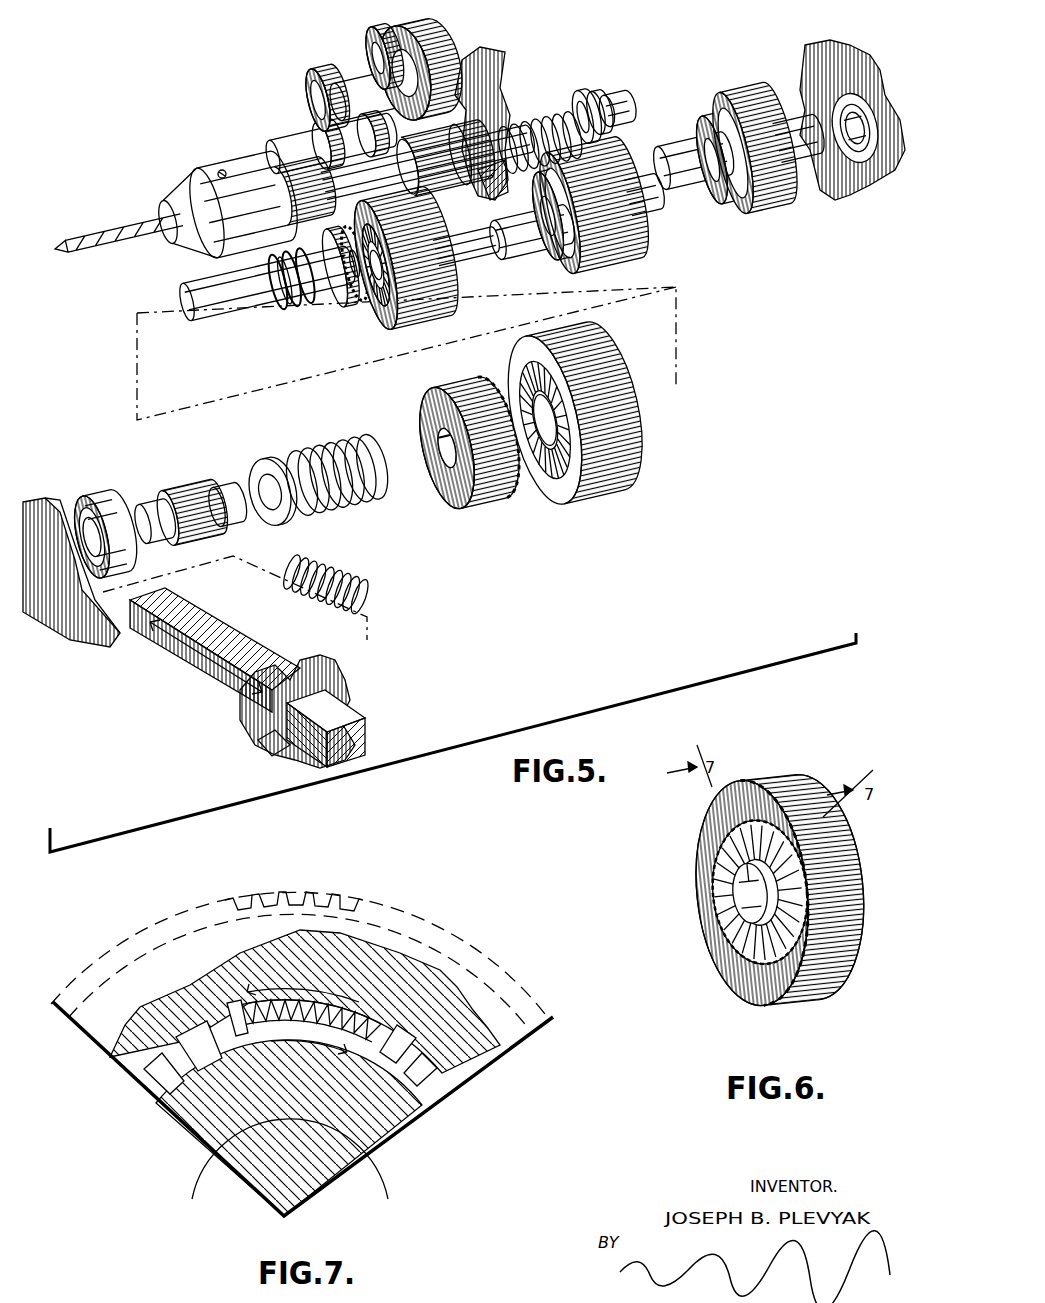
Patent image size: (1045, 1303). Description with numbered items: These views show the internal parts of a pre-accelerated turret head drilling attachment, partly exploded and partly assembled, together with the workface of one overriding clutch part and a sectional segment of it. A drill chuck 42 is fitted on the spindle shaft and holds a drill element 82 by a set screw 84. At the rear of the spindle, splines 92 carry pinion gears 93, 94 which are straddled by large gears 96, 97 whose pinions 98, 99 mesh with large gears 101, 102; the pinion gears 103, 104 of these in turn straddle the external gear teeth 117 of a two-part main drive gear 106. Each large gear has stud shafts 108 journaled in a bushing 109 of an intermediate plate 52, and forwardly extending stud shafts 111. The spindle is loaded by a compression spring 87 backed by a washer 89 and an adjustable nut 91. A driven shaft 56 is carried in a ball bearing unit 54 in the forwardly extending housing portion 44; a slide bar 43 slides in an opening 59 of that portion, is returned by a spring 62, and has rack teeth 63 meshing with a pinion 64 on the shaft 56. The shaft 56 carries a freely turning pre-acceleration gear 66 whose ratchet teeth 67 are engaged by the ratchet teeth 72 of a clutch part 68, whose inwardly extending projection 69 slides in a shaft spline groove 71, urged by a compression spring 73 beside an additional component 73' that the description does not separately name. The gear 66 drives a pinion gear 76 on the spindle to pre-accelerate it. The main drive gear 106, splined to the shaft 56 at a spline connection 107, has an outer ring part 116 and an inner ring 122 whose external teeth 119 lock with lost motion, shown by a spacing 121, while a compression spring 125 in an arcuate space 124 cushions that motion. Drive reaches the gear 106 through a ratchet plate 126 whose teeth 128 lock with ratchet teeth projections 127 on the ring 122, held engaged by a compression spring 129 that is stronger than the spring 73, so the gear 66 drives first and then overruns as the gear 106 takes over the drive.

In FIG. 5, the drill chuck 42 is at (200, 180).
In FIG. 5, the slide bar 43 is at (360, 726).
In FIG. 5, the forwardly extending housing portion 44 is at (60, 640).
In FIG. 5, the intermediate plate 52 is at (482, 75).
In FIG. 5, the ball bearing unit 54 is at (95, 495).
In FIG. 5, the driven shaft 56 is at (210, 318).
In FIG. 7, the driven shaft 56 is at (322, 1186).
In FIG. 5, the opening 59 is at (265, 748).
In FIG. 5, the spring 62 is at (335, 570).
In FIG. 5, the rack teeth 63 is at (230, 642).
In FIG. 5, the pinion 64 is at (195, 490).
In FIG. 5, the pre-acceleration gear 66 is at (578, 490).
In FIG. 5, the ratchet teeth 67 is at (555, 488).
In FIG. 5, the clutch part 68 is at (462, 490).
In FIG. 5, the inwardly extending projection 69 is at (443, 432).
In FIG. 5, the shaft spline groove 71 is at (235, 488).
In FIG. 5, the ratchet teeth 72 is at (500, 490).
In FIG. 5, the compression spring 73 is at (337, 459).
In FIG. 5, the washer 73' is at (273, 471).
In FIG. 5, the pinion gear 76 is at (300, 262).
In FIG. 5, the drill element 82 is at (108, 232).
In FIG. 5, the set screw 84 is at (226, 170).
In FIG. 5, the compression spring 87 is at (580, 105).
In FIG. 5, the washer 89 is at (599, 100).
In FIG. 5, the adjustable nut 91 is at (618, 112).
In FIG. 5, the splines 92 is at (430, 176).
In FIG. 5, the pinion gear 93 is at (490, 178).
In FIG. 5, the pinion gear 94 is at (506, 135).
In FIG. 5, the large gear 96 is at (402, 28).
In FIG. 5, the large gear 97 is at (756, 195).
In FIG. 5, the pinion 98 is at (372, 40).
In FIG. 5, the pinion 99 is at (742, 200).
In FIG. 5, the large gear 101 is at (312, 90).
In FIG. 5, the large gear 102 is at (636, 256).
In FIG. 5, the pinion gear 103 is at (318, 130).
In FIG. 5, the pinion gear 104 is at (555, 262).
In FIG. 5, the main drive gear 106 is at (443, 300).
In FIG. 6, the main drive gear 106 is at (868, 855).
In FIG. 5, the spline connection 107 is at (480, 250).
In FIG. 5, the stud shafts 108 is at (672, 190).
In FIG. 5, the bushing 109 is at (845, 165).
In FIG. 5, the forwardly extending stud shafts 111 is at (372, 95).
In FIG. 5, the outer ring part 116 is at (372, 322).
In FIG. 6, the outer ring part 116 is at (710, 830).
In FIG. 7, the outer ring part 116 is at (462, 976).
In FIG. 6, the external gear teeth 117 is at (793, 780).
In FIG. 7, the external gear teeth 117 is at (345, 902).
In FIG. 7, the external teeth 119 is at (225, 1022).
In FIG. 7, the spacing 121 is at (440, 1080).
In FIG. 6, the inner ring 122 is at (778, 985).
In FIG. 7, the inner ring 122 is at (372, 1116).
In FIG. 7, the arcuate space 124 is at (340, 1000).
In FIG. 7, the compression spring 125 is at (245, 1000).
In FIG. 5, the ratchet plate 126 is at (338, 305).
In FIG. 6, the ratchet teeth projections 127 is at (735, 935).
In FIG. 5, the teeth 128 is at (355, 300).
In FIG. 5, the compression spring 129 is at (280, 310).